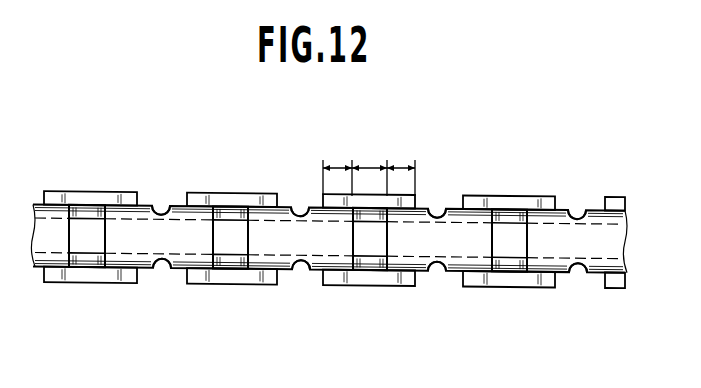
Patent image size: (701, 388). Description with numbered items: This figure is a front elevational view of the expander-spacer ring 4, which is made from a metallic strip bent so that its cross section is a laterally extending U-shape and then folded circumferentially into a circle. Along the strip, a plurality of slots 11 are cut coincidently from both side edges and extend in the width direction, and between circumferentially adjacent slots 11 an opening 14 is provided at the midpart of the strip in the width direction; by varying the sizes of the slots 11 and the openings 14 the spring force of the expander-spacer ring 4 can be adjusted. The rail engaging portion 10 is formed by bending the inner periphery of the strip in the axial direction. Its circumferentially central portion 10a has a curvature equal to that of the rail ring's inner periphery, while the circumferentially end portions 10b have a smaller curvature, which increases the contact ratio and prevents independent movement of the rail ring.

The expander-spacer ring 4 is at (558, 192).
The rail engaging portion 10 is at (232, 193).
The circumferentially central portion 10a is at (370, 165).
The circumferentially end portions 10b is at (325, 165).
The slots 11 is at (161, 205).
The opening 14 is at (88, 243).